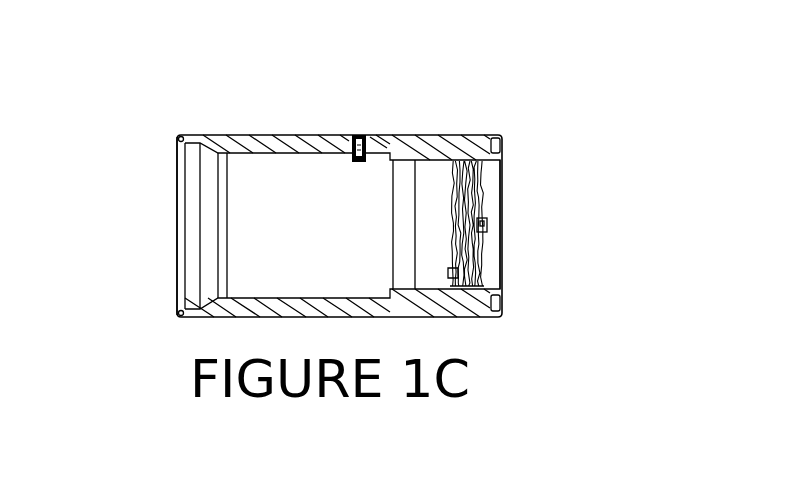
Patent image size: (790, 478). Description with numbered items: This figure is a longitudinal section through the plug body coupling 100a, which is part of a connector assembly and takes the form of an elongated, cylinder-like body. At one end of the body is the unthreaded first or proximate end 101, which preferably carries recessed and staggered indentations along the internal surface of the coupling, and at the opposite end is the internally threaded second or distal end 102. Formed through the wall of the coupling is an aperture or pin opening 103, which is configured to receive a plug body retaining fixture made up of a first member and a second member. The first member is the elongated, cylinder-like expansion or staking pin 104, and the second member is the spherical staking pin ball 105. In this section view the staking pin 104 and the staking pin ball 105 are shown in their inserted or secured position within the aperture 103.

The plug body coupling 100a is at (563, 114).
The proximate end 101 is at (178, 218).
The distal end 102 is at (502, 220).
The aperture 103 is at (353, 134).
The staking pin 104 is at (312, 133).
The staking pin ball 105 is at (387, 134).